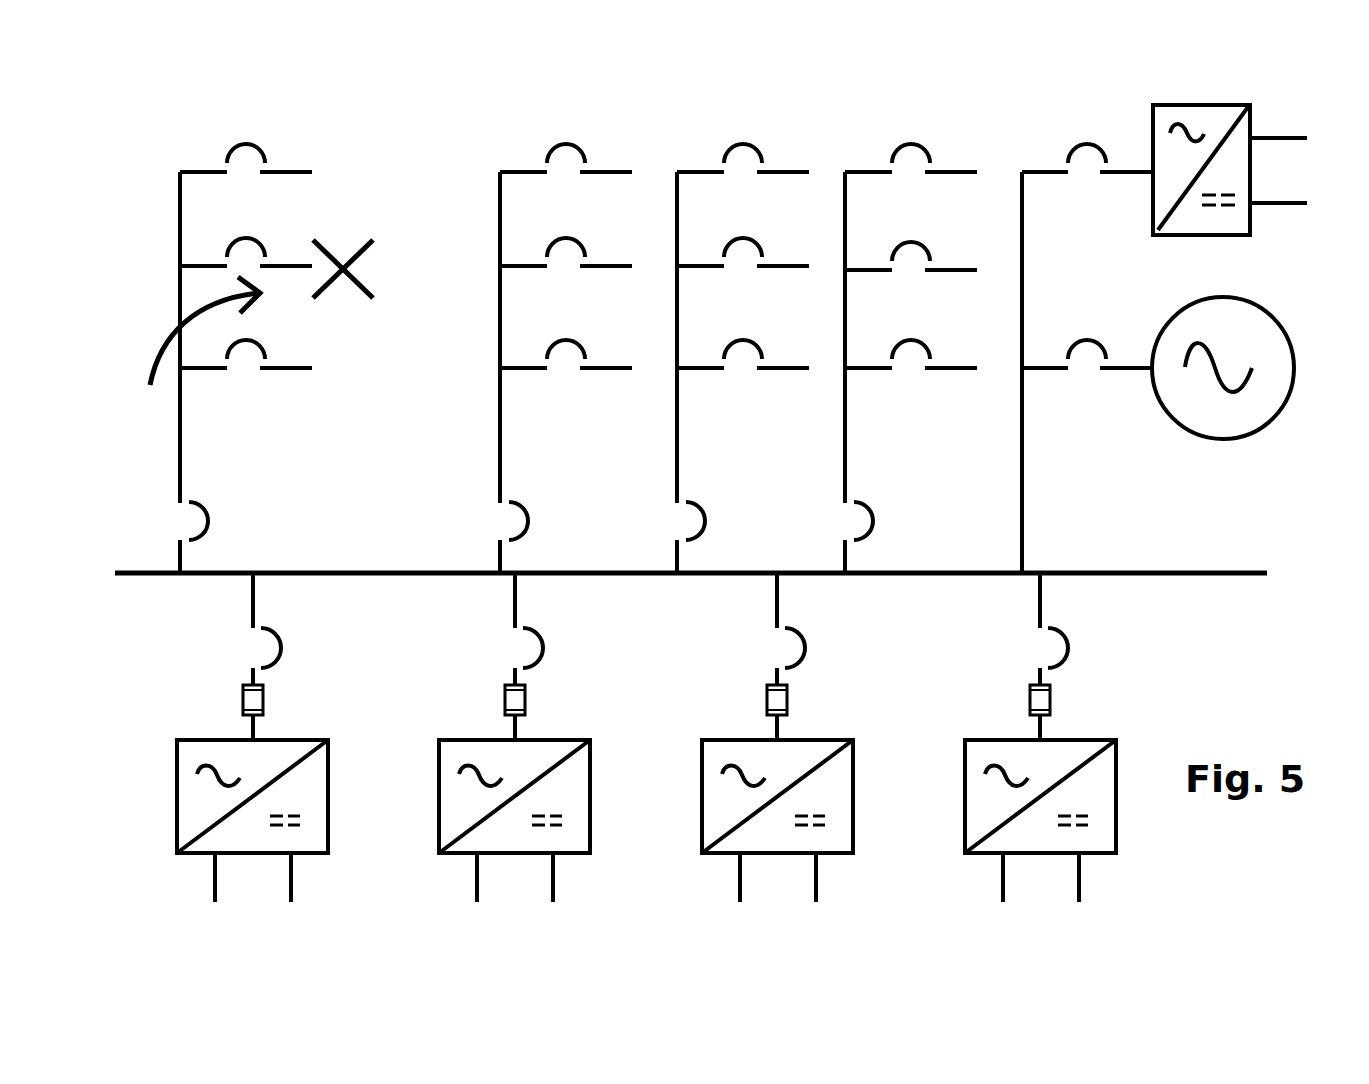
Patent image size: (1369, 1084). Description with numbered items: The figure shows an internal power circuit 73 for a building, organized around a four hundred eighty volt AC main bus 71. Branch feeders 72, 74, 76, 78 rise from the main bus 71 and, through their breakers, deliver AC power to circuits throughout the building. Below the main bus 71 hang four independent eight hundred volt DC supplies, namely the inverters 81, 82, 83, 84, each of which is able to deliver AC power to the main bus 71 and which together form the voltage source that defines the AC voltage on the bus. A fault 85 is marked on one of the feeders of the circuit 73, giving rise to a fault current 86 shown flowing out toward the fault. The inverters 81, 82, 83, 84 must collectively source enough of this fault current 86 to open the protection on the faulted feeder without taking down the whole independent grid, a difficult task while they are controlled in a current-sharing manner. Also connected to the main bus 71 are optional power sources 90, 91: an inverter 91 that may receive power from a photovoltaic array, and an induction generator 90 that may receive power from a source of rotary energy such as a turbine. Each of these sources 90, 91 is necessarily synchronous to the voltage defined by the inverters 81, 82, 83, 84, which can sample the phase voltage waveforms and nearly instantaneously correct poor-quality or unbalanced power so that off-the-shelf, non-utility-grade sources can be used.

The main bus 71 is at (625, 585).
The branch feeder 72 is at (858, 158).
The internal power circuit 73 is at (180, 90).
The branch feeder 74 is at (670, 178).
The branch feeder 76 is at (495, 187).
The branch feeder 78 is at (163, 202).
The inverter 81 is at (957, 773).
The inverter 82 is at (693, 772).
The inverter 83 is at (430, 775).
The inverter 84 is at (172, 760).
The fault 85 is at (417, 298).
The fault current 86 is at (152, 328).
The induction generator 90 is at (1295, 407).
The inverter 91 is at (1217, 100).